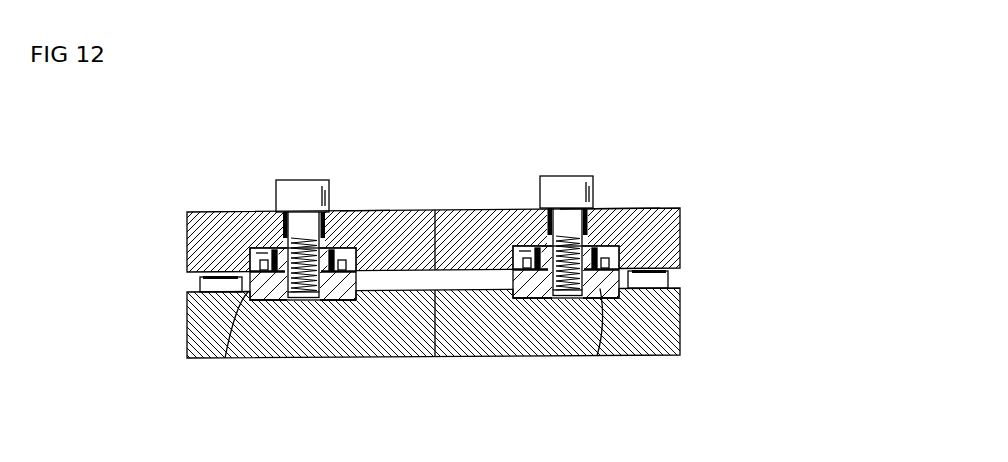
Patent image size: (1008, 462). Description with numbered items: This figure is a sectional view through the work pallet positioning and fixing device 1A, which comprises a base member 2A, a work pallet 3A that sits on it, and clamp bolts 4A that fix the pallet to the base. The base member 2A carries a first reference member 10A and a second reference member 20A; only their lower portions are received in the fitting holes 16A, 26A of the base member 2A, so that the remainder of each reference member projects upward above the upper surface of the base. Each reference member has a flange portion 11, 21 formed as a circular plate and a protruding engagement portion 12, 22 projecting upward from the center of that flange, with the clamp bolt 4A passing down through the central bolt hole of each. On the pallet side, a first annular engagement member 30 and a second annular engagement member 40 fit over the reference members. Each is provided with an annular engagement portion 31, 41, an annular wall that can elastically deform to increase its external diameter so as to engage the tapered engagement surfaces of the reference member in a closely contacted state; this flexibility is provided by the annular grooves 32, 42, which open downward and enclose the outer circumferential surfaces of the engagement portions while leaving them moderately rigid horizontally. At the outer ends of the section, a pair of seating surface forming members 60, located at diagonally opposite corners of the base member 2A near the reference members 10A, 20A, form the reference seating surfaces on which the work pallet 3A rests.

The positioning and fixing device 1A is at (534, 136).
The base member 2A is at (398, 359).
The work pallet 3A is at (394, 206).
The clamp bolt 4A is at (318, 179).
The first reference member 10A is at (270, 303).
The flange portion 11 is at (337, 282).
The protruding engagement portion 12 is at (278, 258).
The fitting hole 16A is at (225, 358).
The second reference member 20A is at (532, 300).
The flange portion 21 is at (518, 284).
The protruding engagement portion 22 is at (538, 253).
The fitting hole 26A is at (598, 357).
The first annular engagement member 30 is at (250, 241).
The annular engagement portion 31 is at (363, 210).
The annular groove 32 is at (353, 257).
The second annular engagement member 40 is at (512, 241).
The annular engagement portion 41 is at (597, 256).
The annular groove 42 is at (612, 259).
The seating surface forming member 60 is at (201, 290).